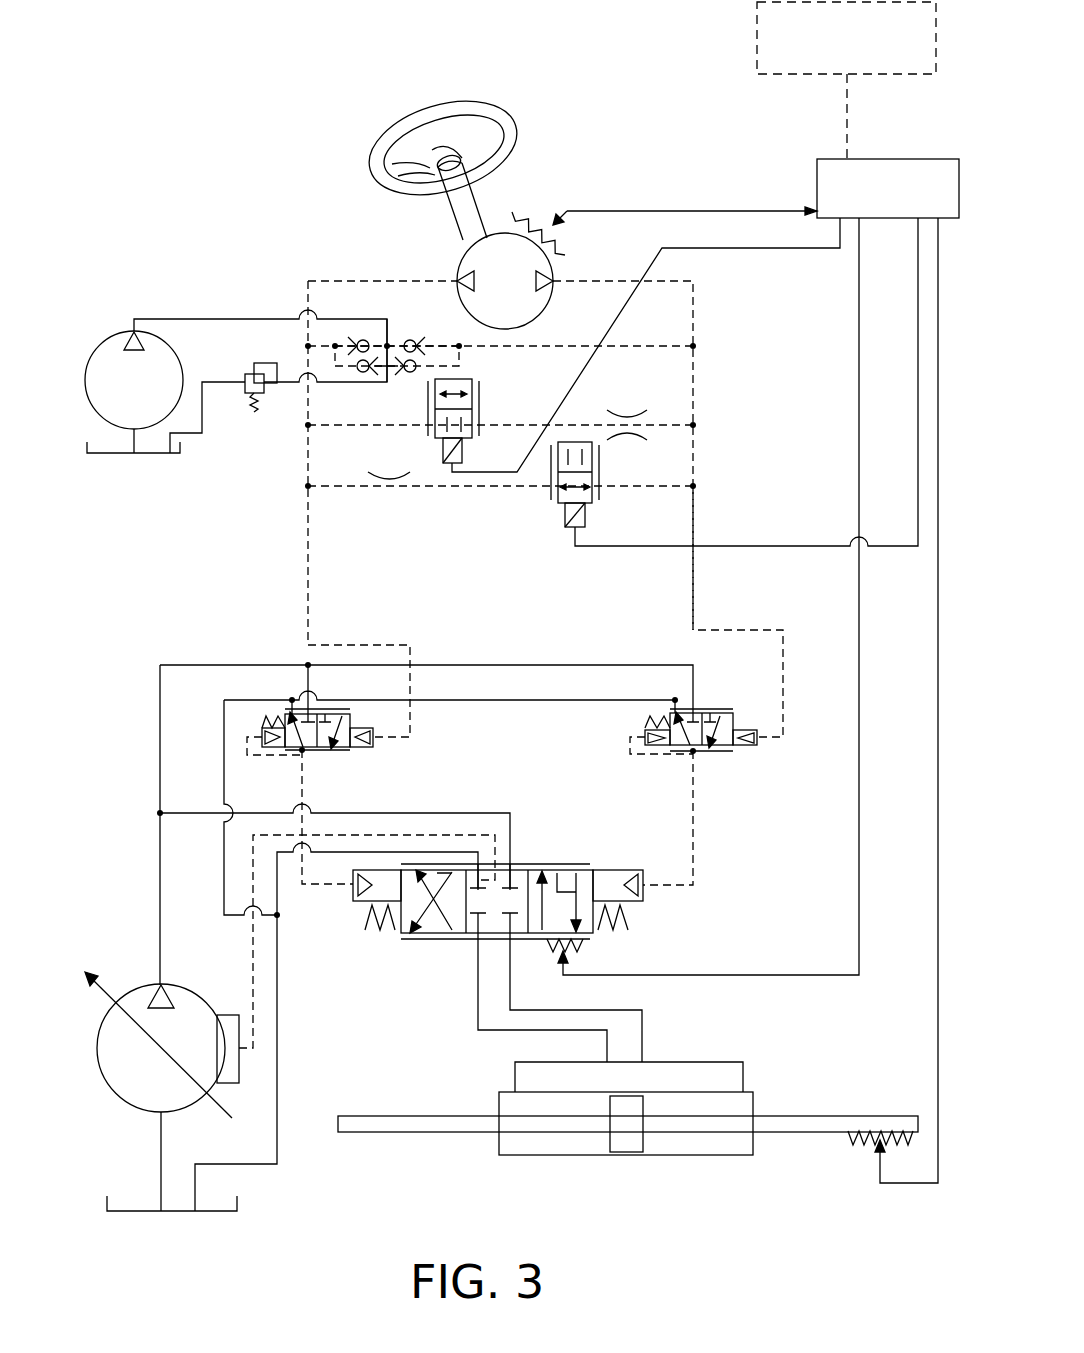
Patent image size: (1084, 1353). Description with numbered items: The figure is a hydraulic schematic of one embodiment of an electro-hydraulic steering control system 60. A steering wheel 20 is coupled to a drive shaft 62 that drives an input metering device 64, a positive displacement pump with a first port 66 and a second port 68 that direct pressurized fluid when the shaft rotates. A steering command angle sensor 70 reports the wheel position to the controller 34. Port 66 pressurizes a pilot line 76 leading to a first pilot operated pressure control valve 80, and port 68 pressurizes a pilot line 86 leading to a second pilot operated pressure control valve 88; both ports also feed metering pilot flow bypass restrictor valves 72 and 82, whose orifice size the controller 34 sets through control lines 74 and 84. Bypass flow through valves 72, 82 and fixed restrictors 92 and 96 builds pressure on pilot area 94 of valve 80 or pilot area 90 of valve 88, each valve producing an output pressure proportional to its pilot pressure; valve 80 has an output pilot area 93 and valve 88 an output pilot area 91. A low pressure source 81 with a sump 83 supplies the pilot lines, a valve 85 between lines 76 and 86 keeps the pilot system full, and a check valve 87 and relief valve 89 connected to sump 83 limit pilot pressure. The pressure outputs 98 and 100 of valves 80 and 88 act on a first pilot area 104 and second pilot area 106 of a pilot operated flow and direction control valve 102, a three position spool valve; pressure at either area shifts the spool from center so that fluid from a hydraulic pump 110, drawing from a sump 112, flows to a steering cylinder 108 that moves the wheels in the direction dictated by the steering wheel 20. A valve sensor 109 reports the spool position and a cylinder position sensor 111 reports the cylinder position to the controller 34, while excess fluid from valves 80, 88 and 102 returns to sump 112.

The steering wheel 20 is at (465, 108).
The controller 34 is at (932, 158).
The electro-hydraulic steering control system 60 is at (176, 112).
The drive shaft 62 is at (470, 204).
The input metering device 64 is at (462, 263).
The first port 66 is at (458, 283).
The second port 68 is at (554, 284).
The steering command angle sensor 70 is at (567, 245).
The metering pilot flow bypass restrictor valve 72 is at (480, 404).
The control line 74 is at (802, 249).
The pilot line 76 is at (306, 453).
The first pilot operated pressure control valve 80 is at (334, 750).
The low pressure source 81 is at (120, 338).
The metering pilot flow bypass restrictor valve 82 is at (556, 500).
The sump 83 is at (105, 450).
The control line 84 is at (800, 546).
The valve 85 is at (404, 339).
The pilot line 86 is at (696, 597).
The check valve 87 is at (400, 374).
The second pilot operated pressure control valve 88 is at (718, 752).
The relief valve 89 is at (247, 374).
The pilot area 90 is at (760, 742).
The output pilot area 91 is at (656, 756).
The restrictor 92 is at (627, 416).
The output pilot area 93 is at (262, 737).
The pilot area 94 is at (374, 742).
The restrictor 96 is at (388, 500).
The pressure output 98 is at (300, 786).
The pressure output 100 is at (690, 838).
The pilot operated flow and direction control valve 102 is at (416, 968).
The first pilot area 104 is at (358, 902).
The second pilot area 106 is at (645, 893).
The steering cylinder 108 is at (535, 1156).
The valve sensor 109 is at (586, 948).
The hydraulic pump 110 is at (148, 986).
The cylinder position sensor 111 is at (896, 1185).
The sump 112 is at (108, 1212).